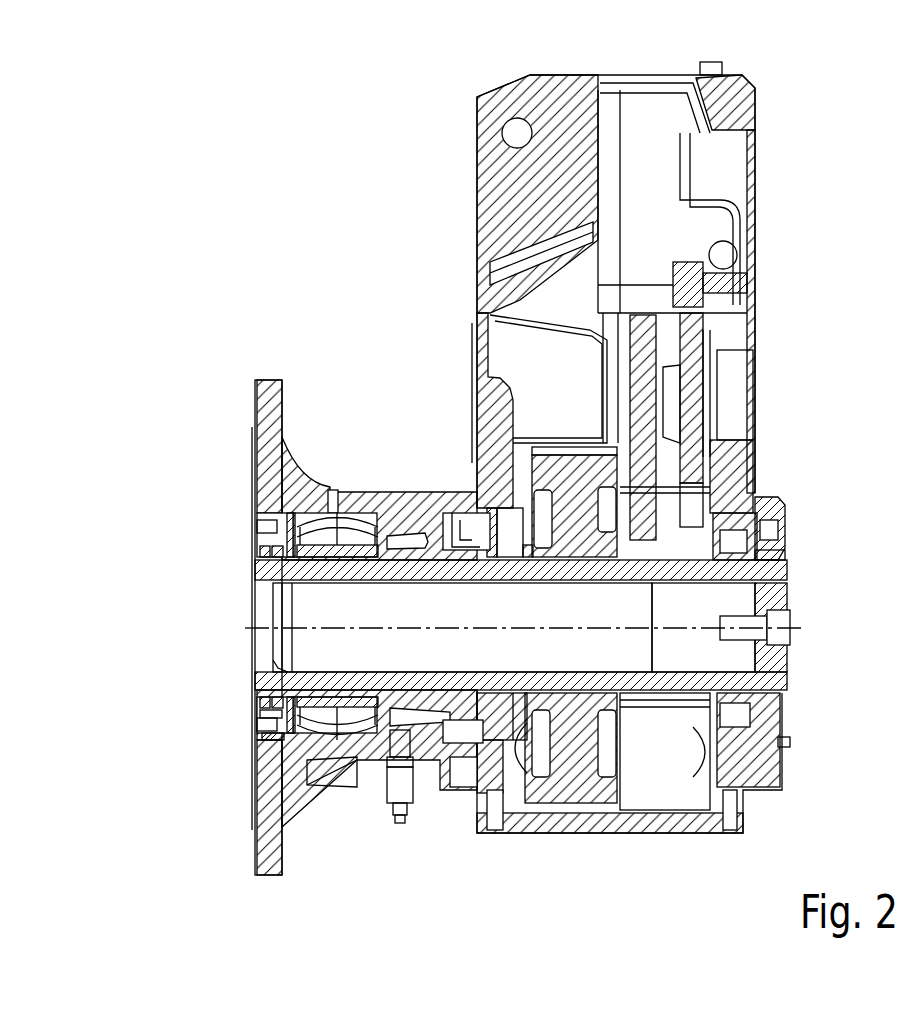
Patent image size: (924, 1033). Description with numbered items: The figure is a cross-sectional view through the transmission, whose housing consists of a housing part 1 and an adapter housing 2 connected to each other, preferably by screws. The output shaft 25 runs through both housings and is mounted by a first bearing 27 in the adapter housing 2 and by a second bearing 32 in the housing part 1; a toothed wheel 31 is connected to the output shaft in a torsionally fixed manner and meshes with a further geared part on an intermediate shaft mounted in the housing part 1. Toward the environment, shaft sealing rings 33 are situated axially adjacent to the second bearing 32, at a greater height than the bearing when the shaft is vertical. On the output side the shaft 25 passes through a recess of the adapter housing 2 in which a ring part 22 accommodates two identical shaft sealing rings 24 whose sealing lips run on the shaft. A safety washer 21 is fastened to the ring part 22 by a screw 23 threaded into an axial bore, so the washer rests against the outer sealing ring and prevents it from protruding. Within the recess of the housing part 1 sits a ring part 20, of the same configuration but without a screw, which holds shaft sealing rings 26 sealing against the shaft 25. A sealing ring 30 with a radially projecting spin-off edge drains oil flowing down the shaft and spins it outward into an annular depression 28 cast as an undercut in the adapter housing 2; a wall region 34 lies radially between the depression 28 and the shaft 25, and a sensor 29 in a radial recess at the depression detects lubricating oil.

The housing part 1 is at (732, 102).
The adapter housing 2 is at (397, 508).
The ring part 20 is at (463, 520).
The safety washer 21 is at (258, 470).
The ring part 22 is at (283, 527).
The screw 23 is at (258, 540).
The shaft sealing rings 24 is at (257, 553).
The output shaft 25 is at (280, 580).
The shaft sealing rings 26 is at (383, 578).
The first bearing 27 is at (283, 728).
The annular depression 28 is at (390, 727).
The sensor 29 is at (400, 785).
The sealing ring 30 is at (430, 713).
The toothed wheel 31 is at (580, 477).
The second bearing 32 is at (737, 554).
The shaft sealing rings 33 is at (785, 563).
The wall region 34 is at (417, 542).